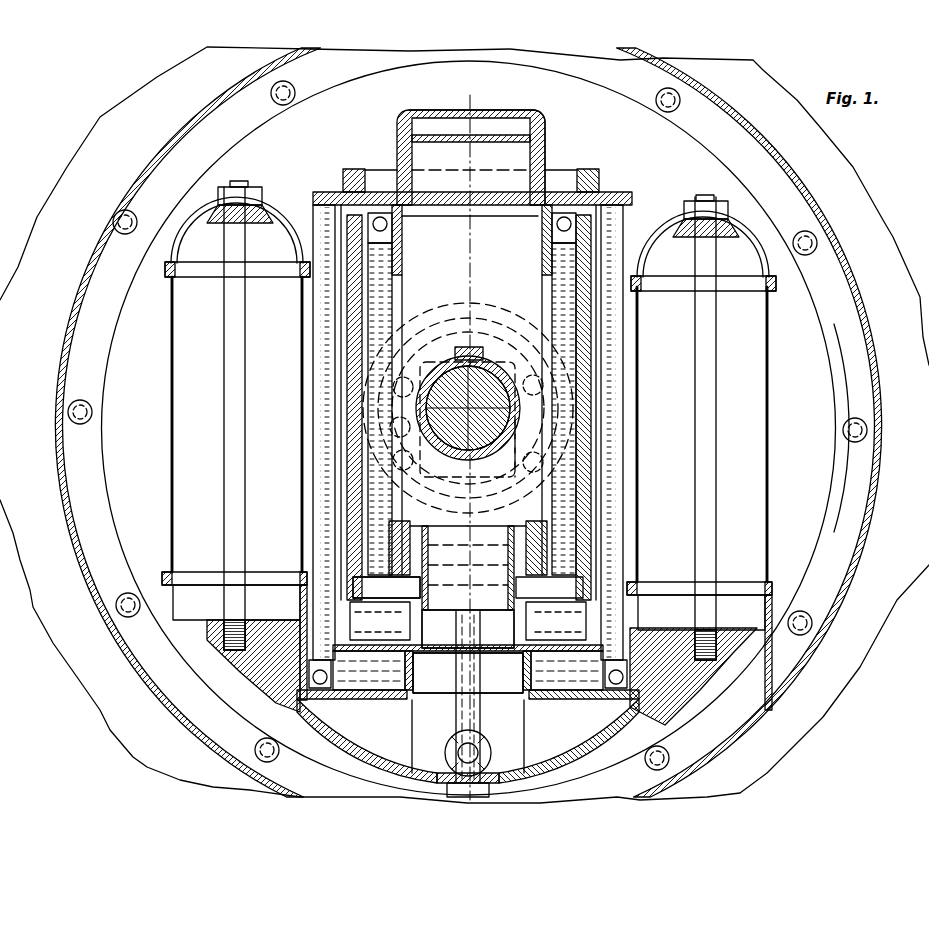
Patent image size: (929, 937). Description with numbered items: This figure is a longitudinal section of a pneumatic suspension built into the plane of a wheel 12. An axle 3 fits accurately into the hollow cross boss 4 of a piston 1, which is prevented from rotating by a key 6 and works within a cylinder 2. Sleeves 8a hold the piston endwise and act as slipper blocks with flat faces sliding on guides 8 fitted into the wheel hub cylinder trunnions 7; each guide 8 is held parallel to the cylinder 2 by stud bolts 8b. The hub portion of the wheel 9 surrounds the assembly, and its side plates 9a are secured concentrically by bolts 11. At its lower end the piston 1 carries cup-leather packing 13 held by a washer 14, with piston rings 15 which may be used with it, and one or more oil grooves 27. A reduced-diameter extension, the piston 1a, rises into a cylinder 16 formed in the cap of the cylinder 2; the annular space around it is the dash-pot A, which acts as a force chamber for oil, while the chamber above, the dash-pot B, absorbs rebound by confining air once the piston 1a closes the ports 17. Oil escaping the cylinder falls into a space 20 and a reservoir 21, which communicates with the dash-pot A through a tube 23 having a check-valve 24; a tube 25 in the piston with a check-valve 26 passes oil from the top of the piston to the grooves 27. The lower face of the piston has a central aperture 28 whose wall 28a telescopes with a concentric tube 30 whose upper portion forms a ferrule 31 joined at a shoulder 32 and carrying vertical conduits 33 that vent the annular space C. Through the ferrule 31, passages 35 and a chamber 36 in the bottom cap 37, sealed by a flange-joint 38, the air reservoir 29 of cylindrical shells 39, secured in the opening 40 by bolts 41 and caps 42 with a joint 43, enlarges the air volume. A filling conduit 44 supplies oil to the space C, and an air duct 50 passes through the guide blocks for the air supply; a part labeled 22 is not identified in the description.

The piston 1 is at (403, 264).
The piston extension 1a is at (414, 193).
The cylinder 2 is at (592, 360).
The axle 3 is at (435, 447).
The hollow cross boss 4 is at (486, 449).
The key 6 is at (479, 357).
The wheel hub cylinder trunnions 7 is at (448, 328).
The guides 8 is at (447, 473).
The sleeves 8a is at (532, 374).
The stud bolts 8b is at (469, 421).
The wheel hub 9 is at (60, 491).
The side plates 9a is at (821, 428).
The bolts 11 is at (812, 252).
The wheel 12 is at (464, 425).
The packing 13 is at (386, 588).
The washer 14 is at (386, 589).
The piston rings 15 is at (345, 544).
The cylinder 16 is at (548, 147).
The ports 17 is at (397, 150).
The space 20 is at (300, 600).
The reservoir 21 is at (377, 685).
The lower block 22 is at (452, 664).
The tube 23 is at (347, 398).
The check-valve 24 is at (468, 711).
The tube 25 is at (548, 298).
The check-valve 26 is at (404, 236).
The oil grooves 27 is at (600, 572).
The aperture 28 is at (467, 437).
The aperture wall 28a is at (496, 466).
The air reservoir 29 is at (469, 429).
The tube 30 is at (468, 629).
The ferrule 31 is at (468, 568).
The shoulder 32 is at (549, 587).
The vertical conduits 33 is at (468, 629).
The passages 35 is at (272, 714).
The chamber 36 is at (468, 738).
The bottom cap 37 is at (215, 650).
The flange-joint 38 is at (468, 669).
The cylindrical shells 39 is at (176, 478).
The opening 40 is at (467, 601).
The bolts 41 is at (246, 447).
The caps 42 is at (182, 241).
The joint 43 is at (300, 280).
The filling conduit 44 is at (458, 713).
The air duct 50 is at (405, 431).
The annular dash-pot A is at (603, 204).
The dash-pot B is at (428, 119).
The annular space C is at (468, 621).